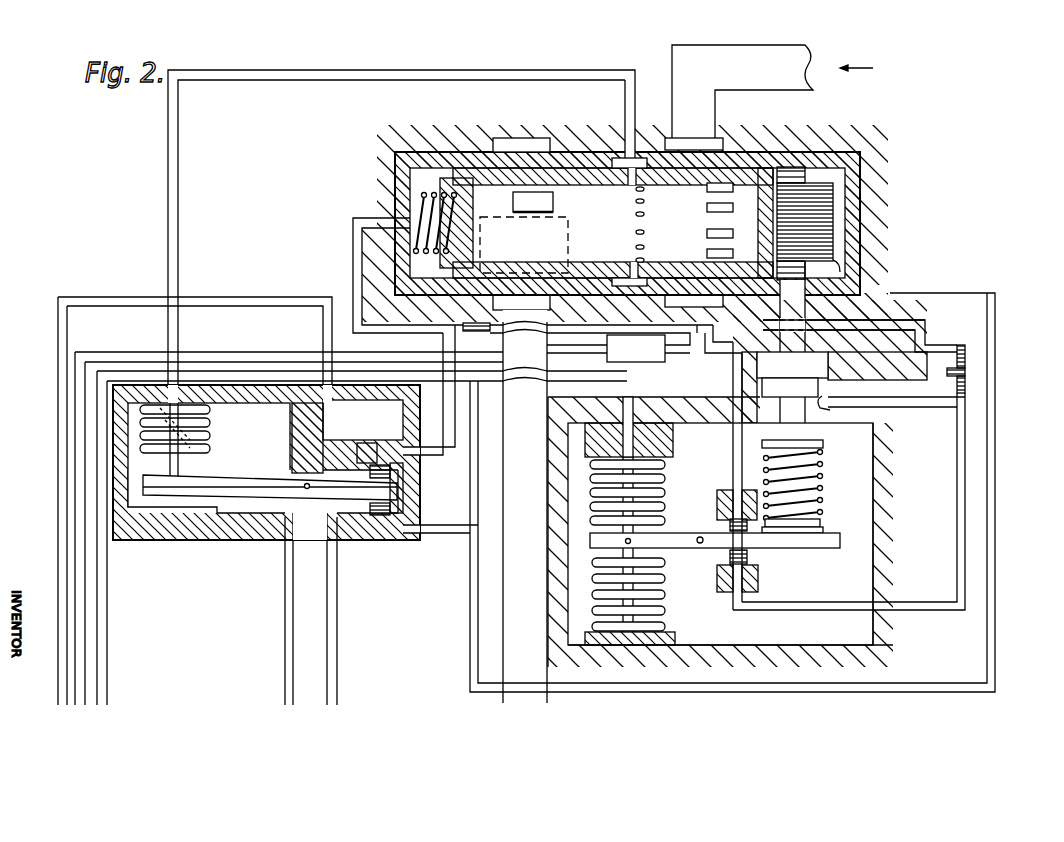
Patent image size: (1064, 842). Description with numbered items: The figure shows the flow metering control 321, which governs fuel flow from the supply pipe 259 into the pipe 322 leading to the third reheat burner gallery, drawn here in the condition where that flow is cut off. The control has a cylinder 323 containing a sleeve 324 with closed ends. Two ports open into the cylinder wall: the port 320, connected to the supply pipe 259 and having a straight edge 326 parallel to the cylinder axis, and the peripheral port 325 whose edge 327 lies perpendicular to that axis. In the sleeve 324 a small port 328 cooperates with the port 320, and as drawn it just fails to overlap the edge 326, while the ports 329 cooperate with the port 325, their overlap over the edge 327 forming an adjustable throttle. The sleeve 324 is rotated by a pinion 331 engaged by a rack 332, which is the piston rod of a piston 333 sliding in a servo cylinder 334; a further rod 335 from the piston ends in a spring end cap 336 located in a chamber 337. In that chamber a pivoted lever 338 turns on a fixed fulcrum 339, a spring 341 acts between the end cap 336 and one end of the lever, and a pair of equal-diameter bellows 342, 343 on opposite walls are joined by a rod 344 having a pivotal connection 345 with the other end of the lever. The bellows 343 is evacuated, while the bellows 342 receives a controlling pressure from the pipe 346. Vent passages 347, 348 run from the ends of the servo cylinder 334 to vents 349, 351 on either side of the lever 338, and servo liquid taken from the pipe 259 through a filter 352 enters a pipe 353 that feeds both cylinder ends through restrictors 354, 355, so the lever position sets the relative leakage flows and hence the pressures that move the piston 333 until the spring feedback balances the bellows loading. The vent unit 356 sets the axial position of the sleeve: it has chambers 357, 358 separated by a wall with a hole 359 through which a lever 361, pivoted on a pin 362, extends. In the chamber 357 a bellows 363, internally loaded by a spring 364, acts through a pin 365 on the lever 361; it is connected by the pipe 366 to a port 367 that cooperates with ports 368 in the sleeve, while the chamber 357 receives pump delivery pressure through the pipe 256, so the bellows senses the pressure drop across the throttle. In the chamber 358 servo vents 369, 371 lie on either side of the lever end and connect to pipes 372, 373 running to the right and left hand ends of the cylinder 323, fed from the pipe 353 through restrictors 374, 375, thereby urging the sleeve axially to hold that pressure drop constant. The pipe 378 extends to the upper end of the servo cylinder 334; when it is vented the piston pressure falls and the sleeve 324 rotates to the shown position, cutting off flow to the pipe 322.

The pipe 256 is at (287, 598).
The supply pipe 259 is at (513, 632).
The port 320 is at (516, 290).
The flow metering control 321 is at (890, 268).
The pipe 322 is at (760, 62).
The cylinder 323 is at (835, 172).
The sleeve 324 is at (548, 247).
The peripheral port 325 is at (700, 160).
The straight edge 326 is at (548, 217).
The edge 327 is at (690, 250).
The small port 328 is at (553, 205).
The ports 329 is at (706, 198).
The pinion 331 is at (818, 217).
The rack 332 is at (805, 272).
The piston 333 is at (800, 362).
The servo cylinder 334 is at (822, 402).
The rod 335 is at (800, 433).
The spring end cap 336 is at (818, 458).
The chamber 337 is at (858, 520).
The pivoted lever 338 is at (830, 548).
The fixed fulcrum 339 is at (700, 545).
The spring 341 is at (815, 512).
The bellows 342 is at (640, 483).
The bellows 343 is at (660, 600).
The rod 344 is at (632, 530).
The pivotal connection 345 is at (625, 542).
The pipe 346 is at (615, 377).
The vent passage 347 is at (733, 440).
The vent passage 348 is at (960, 594).
The vent 349 is at (718, 524).
The vent 351 is at (748, 560).
The filter 352 is at (601, 342).
The pipe 353 is at (712, 342).
The restrictor 354 is at (962, 355).
The restrictor 355 is at (962, 388).
The vent unit 356 is at (183, 548).
The chamber 357 is at (258, 454).
The chamber 358 is at (381, 412).
The hole 359 is at (300, 490).
The lever 361 is at (240, 490).
The pivot pin 362 is at (308, 478).
The bellows 363 is at (195, 410).
The spring 364 is at (212, 432).
The pin 365 is at (172, 492).
The pipe 366 is at (170, 172).
The port 367 is at (642, 155).
The ports 368 is at (646, 180).
The servo vent 369 is at (372, 471).
The servo vent 371 is at (375, 512).
The pipe 372 is at (472, 578).
The pipe 373 is at (440, 543).
The restrictor 374 is at (950, 373).
The restrictor 375 is at (475, 332).
The pipe 378 is at (276, 353).